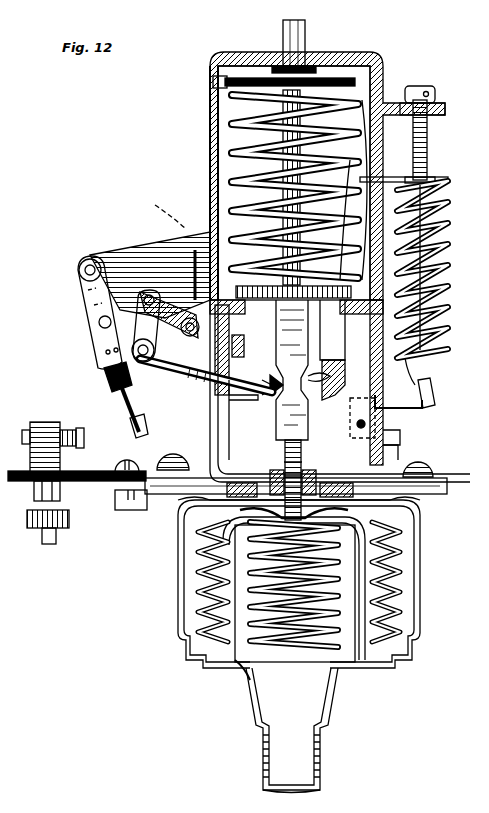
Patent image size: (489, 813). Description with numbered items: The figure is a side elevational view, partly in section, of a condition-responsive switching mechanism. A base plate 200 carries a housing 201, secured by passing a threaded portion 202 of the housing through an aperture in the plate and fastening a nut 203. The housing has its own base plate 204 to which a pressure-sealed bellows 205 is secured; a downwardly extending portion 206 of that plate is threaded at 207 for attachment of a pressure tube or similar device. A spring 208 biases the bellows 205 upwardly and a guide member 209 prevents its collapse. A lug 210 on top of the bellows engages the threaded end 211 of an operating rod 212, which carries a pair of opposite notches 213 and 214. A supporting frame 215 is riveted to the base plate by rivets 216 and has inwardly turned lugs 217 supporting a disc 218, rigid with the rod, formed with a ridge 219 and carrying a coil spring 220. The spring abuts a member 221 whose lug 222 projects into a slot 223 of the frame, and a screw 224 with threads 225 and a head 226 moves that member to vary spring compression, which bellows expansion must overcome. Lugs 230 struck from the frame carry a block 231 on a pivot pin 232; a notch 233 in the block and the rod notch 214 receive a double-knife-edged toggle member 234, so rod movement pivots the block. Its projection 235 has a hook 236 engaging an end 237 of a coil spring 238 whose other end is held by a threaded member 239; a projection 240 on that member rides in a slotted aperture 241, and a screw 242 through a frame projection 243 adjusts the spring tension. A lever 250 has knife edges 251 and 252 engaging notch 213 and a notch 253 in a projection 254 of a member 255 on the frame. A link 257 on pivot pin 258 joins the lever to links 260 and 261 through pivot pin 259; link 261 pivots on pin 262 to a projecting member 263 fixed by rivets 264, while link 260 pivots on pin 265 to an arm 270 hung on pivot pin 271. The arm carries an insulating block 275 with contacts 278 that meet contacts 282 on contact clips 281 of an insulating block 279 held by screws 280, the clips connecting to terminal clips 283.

The base plate 200 is at (430, 494).
The housing 201 is at (420, 592).
The threaded portion 202 is at (320, 484).
The nut 203 is at (240, 483).
The base plate 204 is at (380, 672).
The bellows 205 is at (375, 552).
The downwardly extending portion 206 is at (332, 713).
The threads 207 is at (320, 772).
The spring 208 is at (282, 678).
The guide member 209 is at (240, 672).
The lug 210 is at (303, 470).
The threaded end 211 is at (284, 458).
The operating rod 212 is at (312, 345).
The notch 213 is at (278, 372).
The notch 214 is at (306, 362).
The supporting frame 215 is at (208, 430).
The rivets 216 is at (174, 458).
The inwardly turned lugs 217 is at (360, 280).
The disc 218 is at (300, 322).
The ridge 219 is at (222, 215).
The coil spring 220 is at (234, 150).
The member 221 is at (228, 80).
The extending lug 222 is at (213, 80).
The slot 223 is at (213, 108).
The screw 224 is at (303, 208).
The threaded portion 225 is at (325, 165).
The head 226 is at (330, 36).
The lugs 230 is at (384, 432).
The block 231 is at (375, 386).
The pivot pin 232 is at (386, 455).
The notch 233 is at (356, 424).
The toggle member 234 is at (316, 374).
The extending projection 235 is at (415, 408).
The hook 236 is at (432, 402).
The end 237 is at (420, 385).
The coil spring 238 is at (440, 300).
The threaded member 239 is at (430, 180).
The projection 240 is at (386, 178).
The slotted aperture 241 is at (378, 125).
The screw 242 is at (432, 88).
The projection 243 is at (440, 105).
The lever 250 is at (200, 372).
The knife edged surface 251 is at (272, 392).
The knife edged surface 252 is at (268, 370).
The notch 253 is at (255, 398).
The projection 254 is at (240, 403).
The member 255 is at (228, 405).
The link 257 is at (135, 338).
The pivot pin 258 is at (145, 362).
The pivot pin 259 is at (138, 268).
The link 260 is at (150, 290).
The link 261 is at (150, 205).
The pin 262 is at (192, 318).
The projecting member 263 is at (198, 250).
The rivets 264 is at (180, 205).
The pin 265 is at (98, 322).
The arm 270 is at (78, 281).
The pivot pin 271 is at (80, 265).
The insulating block 275 is at (108, 375).
The contacts 278 is at (128, 424).
The insulating block 279 is at (92, 481).
The screws 280 is at (137, 510).
The contact clips 281 is at (56, 400).
The contact 282 is at (80, 428).
The terminal clips 283 is at (38, 532).